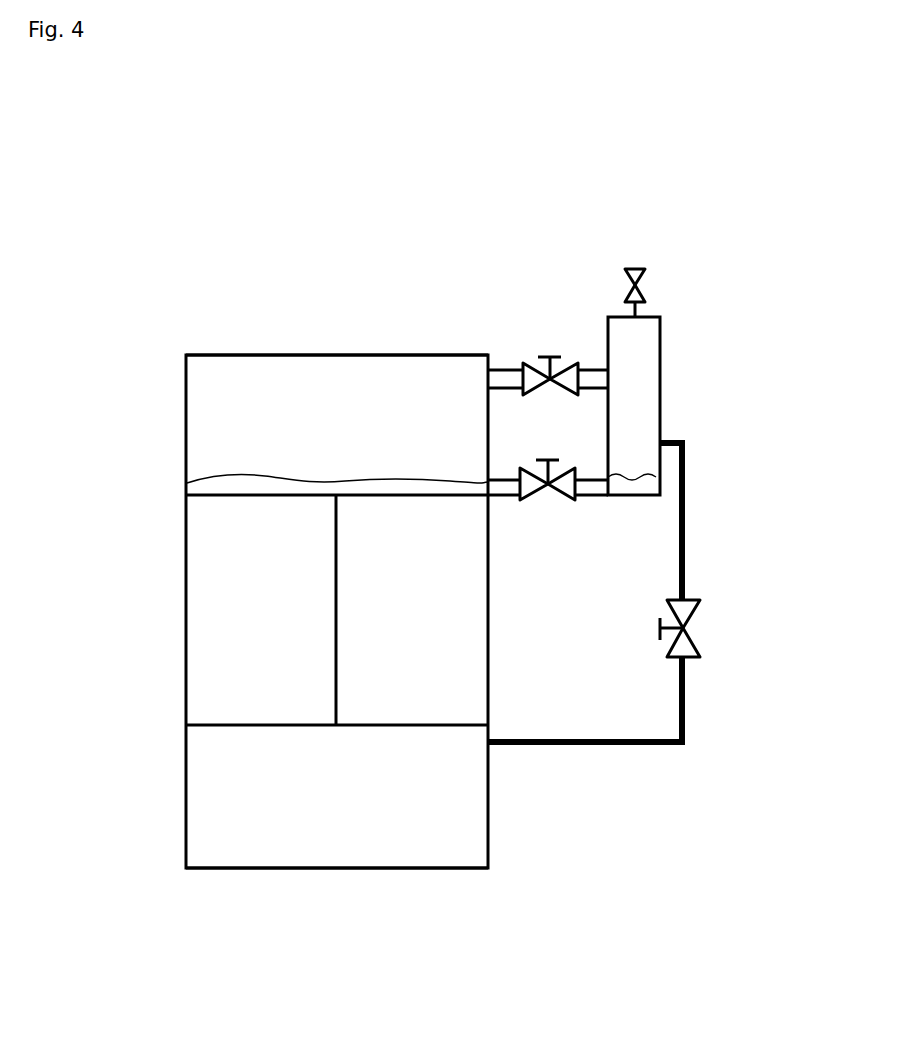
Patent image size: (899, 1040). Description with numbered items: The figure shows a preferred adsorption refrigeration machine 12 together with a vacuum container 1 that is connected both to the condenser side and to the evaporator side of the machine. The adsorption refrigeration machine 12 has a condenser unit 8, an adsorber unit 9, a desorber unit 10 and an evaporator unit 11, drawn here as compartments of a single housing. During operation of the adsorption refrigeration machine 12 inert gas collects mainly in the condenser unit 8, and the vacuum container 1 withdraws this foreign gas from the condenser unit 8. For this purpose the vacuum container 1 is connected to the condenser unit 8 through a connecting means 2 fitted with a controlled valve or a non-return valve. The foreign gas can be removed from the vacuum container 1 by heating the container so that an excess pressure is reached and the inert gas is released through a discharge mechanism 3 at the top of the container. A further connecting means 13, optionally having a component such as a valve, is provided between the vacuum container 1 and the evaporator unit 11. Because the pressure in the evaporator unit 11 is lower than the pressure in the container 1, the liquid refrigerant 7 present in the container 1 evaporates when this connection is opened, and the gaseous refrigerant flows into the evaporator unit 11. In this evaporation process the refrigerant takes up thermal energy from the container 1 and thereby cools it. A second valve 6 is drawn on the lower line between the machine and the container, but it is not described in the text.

The vacuum container 1 is at (664, 404).
The connecting means 2 is at (538, 335).
The discharge mechanism 3 is at (607, 247).
The lower valve 6 is at (539, 510).
The liquid refrigerant 7 is at (218, 484).
The condenser unit 8 is at (257, 353).
The adsorber unit 9 is at (235, 578).
The desorber unit 10 is at (470, 635).
The evaporator unit 11 is at (448, 777).
The adsorption refrigeration machine 12 is at (150, 318).
The connecting means 13 is at (699, 615).